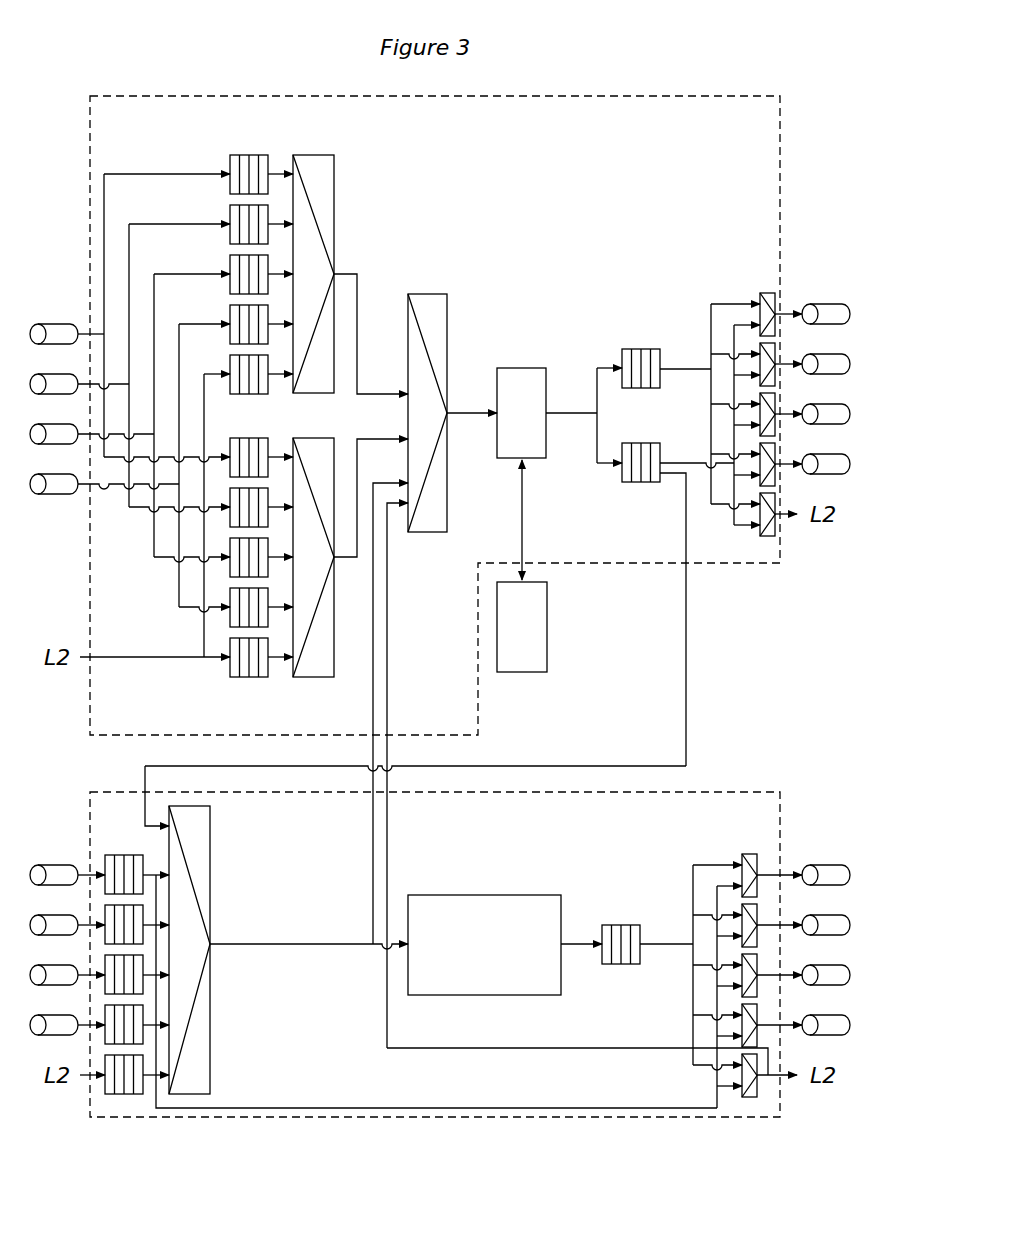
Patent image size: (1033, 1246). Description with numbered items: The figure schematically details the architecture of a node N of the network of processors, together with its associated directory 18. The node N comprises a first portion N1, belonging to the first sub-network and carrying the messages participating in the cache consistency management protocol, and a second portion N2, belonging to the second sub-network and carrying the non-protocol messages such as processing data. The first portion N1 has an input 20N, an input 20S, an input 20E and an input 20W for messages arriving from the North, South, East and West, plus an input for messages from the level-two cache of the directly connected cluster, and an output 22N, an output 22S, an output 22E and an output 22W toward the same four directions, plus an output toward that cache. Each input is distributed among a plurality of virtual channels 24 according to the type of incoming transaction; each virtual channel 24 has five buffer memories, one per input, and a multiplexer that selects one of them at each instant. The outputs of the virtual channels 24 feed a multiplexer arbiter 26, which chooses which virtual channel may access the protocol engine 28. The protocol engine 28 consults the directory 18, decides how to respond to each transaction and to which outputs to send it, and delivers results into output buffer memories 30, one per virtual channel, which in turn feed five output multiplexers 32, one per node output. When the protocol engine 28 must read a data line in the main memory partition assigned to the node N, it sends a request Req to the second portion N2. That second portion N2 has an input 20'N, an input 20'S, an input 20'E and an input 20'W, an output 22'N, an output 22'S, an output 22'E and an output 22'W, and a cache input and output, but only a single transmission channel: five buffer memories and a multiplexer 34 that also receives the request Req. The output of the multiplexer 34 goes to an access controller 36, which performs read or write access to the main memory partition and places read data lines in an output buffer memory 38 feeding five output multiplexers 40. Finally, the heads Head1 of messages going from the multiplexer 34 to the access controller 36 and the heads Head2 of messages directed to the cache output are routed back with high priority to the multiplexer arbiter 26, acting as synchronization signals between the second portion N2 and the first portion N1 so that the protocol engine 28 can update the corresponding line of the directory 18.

The directory 18 is at (536, 639).
The input for the direction North 20N is at (67, 324).
The input for the direction South 20S is at (79, 374).
The input for the direction East 20E is at (92, 424).
The input for the direction West 20W is at (104, 474).
The output for the direction North 22N is at (812, 302).
The output for the direction South 22S is at (812, 352).
The output for the direction East 22E is at (812, 402).
The output for the direction West 22W is at (814, 452).
The virtual channels 24 is at (334, 151).
The multiplexer arbiter 26 is at (428, 533).
The protocol engine 28 is at (535, 426).
The output buffer memories 30 is at (650, 522).
The output multiplexers 32 is at (767, 286).
The multiplexer 34 is at (210, 842).
The access controller 36 is at (498, 957).
The output buffer memory 38 is at (612, 925).
The output multiplexers 40 is at (752, 852).
The input for the direction North 20'N is at (67, 865).
The input for the direction South 20'S is at (67, 915).
The input for the direction East 20'E is at (67, 965).
The input for the direction West 20'W is at (67, 1015).
The output for the direction North 22'N is at (805, 863).
The output for the direction South 22'S is at (804, 913).
The output for the direction East 22'E is at (804, 963).
The output for the direction West 22'W is at (808, 1013).
The node N is at (640, 84).
The first portion N1 is at (580, 563).
The second portion N2 is at (694, 791).
The heads of messages directed to the access controller Head1 is at (373, 898).
The heads of messages directed to the output L2 Head2 is at (388, 815).
The request Req is at (686, 608).